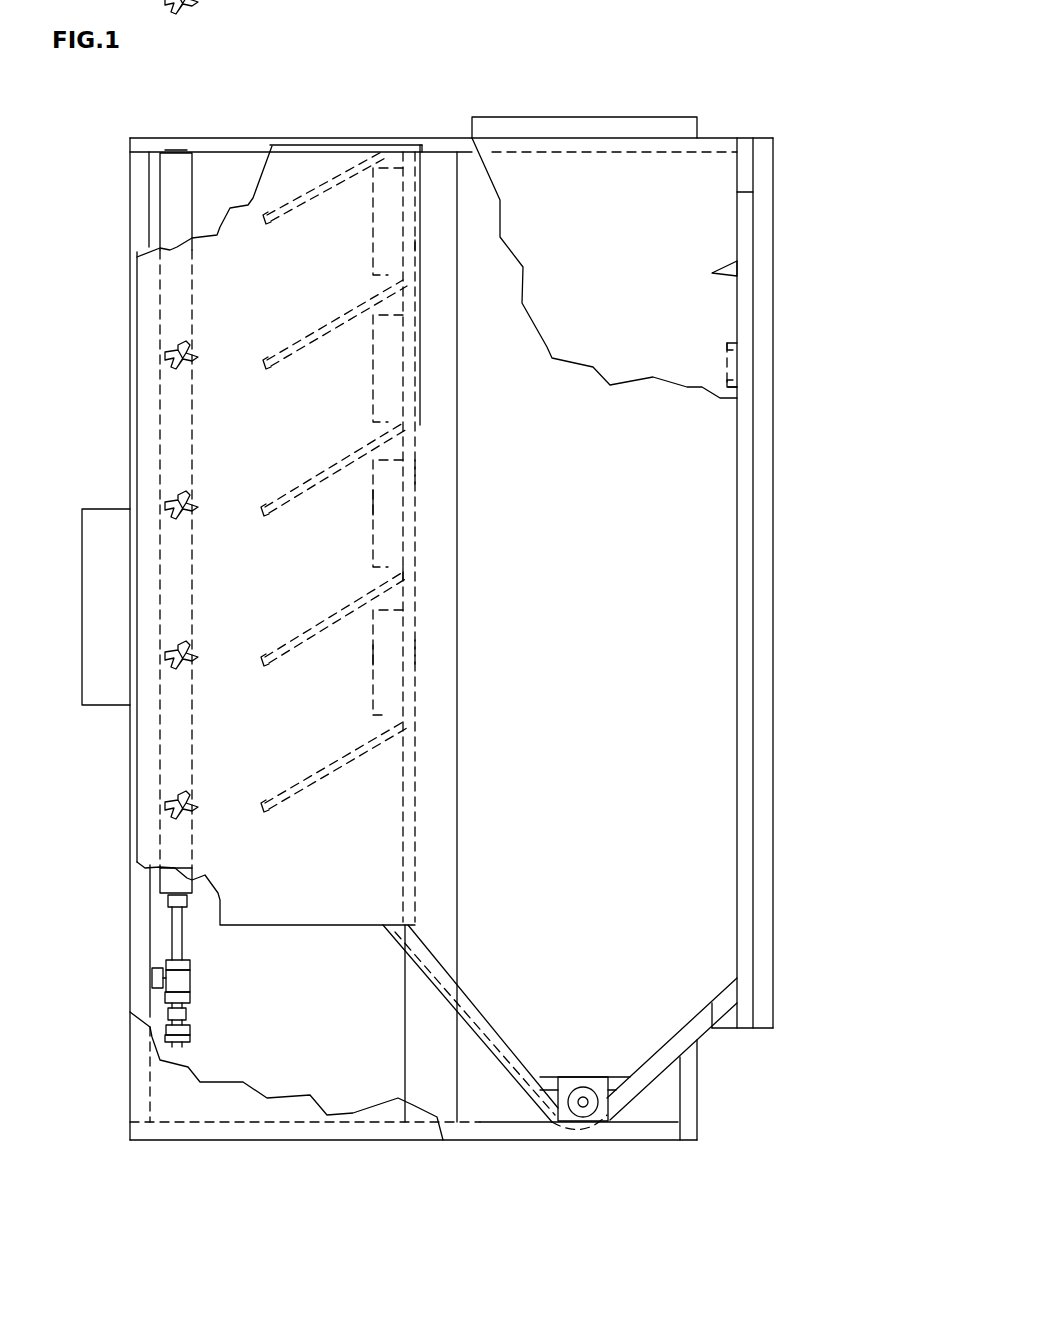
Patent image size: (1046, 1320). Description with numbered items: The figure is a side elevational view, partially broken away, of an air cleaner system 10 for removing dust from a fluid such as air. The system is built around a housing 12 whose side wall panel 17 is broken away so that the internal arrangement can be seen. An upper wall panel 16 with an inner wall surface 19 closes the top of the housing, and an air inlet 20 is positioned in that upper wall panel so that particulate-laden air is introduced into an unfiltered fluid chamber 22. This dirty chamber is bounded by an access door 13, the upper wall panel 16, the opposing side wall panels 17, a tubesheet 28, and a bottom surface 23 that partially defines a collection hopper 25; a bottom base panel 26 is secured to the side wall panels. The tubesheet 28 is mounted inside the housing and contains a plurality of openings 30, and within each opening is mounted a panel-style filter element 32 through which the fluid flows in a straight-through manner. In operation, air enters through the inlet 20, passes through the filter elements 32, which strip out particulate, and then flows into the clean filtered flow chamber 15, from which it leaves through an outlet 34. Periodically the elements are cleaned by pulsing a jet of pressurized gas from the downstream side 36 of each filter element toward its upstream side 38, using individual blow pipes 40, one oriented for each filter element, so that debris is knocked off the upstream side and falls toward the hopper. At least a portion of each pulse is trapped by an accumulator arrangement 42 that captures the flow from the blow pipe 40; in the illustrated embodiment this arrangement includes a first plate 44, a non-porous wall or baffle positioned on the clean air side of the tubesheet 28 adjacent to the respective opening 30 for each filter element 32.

The air cleaner system 10 is at (803, 95).
The housing 12 is at (130, 950).
The access door 13 is at (775, 850).
The filtered flow chamber 15 is at (210, 432).
The upper wall panel 16 is at (724, 137).
The side wall panel 17 is at (173, 1078).
The inner wall surface 19 is at (313, 157).
The air inlet 20 is at (662, 115).
The unfiltered fluid chamber 22 is at (735, 270).
The bottom surface 23 is at (467, 992).
The hopper 25 is at (699, 1058).
The bottom base panel 26 is at (455, 1142).
The tubesheet 28 is at (403, 577).
The opening 30 is at (410, 245).
The panel-style filter element 32 is at (373, 243).
The outlet 34 is at (100, 625).
The downstream side 36 is at (373, 503).
The upstream side 38 is at (413, 472).
The blow pipe 40 is at (177, 355).
The accumulator arrangement 42 is at (221, 850).
The first plate 44 is at (285, 200).